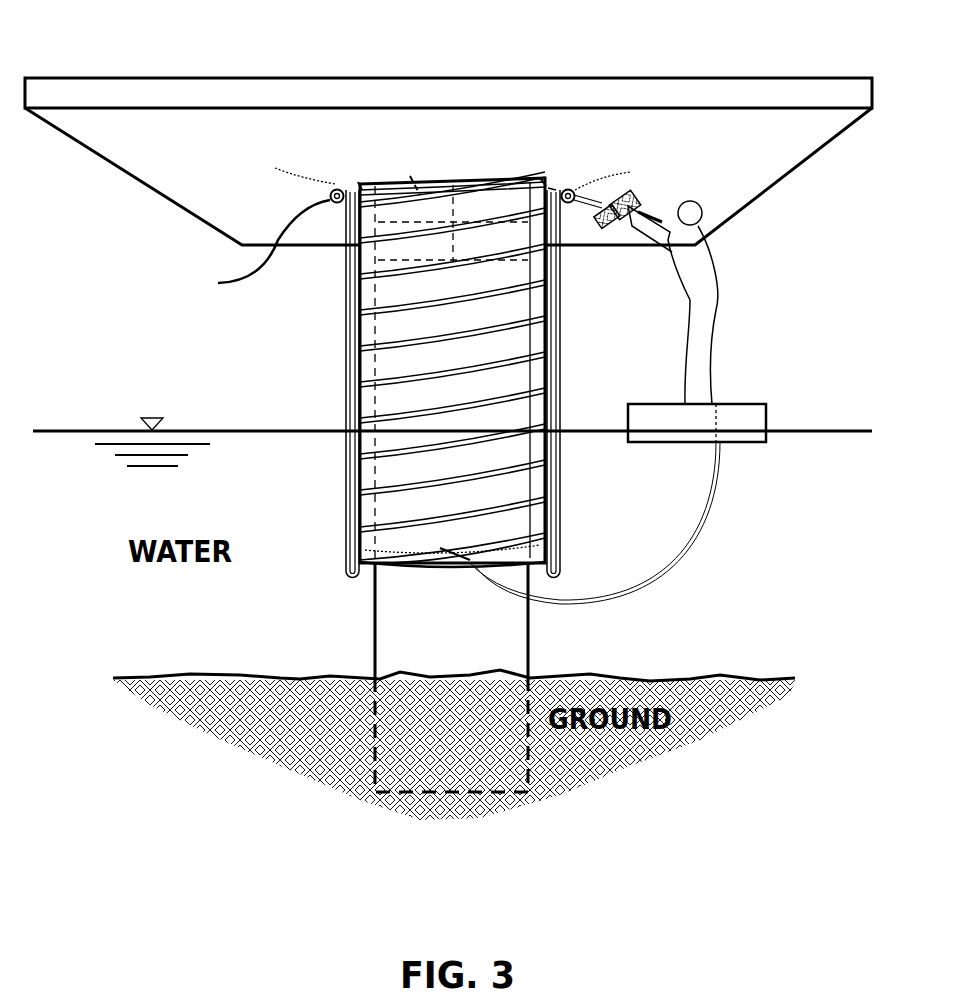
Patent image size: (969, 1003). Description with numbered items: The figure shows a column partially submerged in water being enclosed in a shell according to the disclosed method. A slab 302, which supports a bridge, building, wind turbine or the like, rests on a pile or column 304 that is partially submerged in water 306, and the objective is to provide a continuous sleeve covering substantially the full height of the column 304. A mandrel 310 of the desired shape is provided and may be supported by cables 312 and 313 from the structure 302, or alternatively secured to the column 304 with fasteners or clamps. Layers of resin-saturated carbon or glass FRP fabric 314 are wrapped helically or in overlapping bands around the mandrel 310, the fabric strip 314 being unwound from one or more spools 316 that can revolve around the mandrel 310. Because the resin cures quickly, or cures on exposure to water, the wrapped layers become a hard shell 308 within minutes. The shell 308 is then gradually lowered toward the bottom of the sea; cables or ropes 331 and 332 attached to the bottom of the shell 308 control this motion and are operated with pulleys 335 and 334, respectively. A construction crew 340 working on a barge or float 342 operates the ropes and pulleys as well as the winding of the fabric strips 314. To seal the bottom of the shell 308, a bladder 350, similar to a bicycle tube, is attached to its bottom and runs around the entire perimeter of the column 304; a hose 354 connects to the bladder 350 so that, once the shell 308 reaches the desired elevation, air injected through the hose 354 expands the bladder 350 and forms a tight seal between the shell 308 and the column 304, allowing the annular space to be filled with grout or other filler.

The slab 302 is at (690, 88).
The pile or column 304 is at (400, 655).
The water 306 is at (197, 430).
The shell 308 is at (378, 330).
The mandrel 310 is at (410, 176).
The cable 312 is at (543, 180).
The cable 313 is at (362, 182).
The FRP fabric 314 is at (553, 190).
The spool 316 is at (628, 192).
The cable or rope 331 is at (558, 500).
The cable or rope 332 is at (347, 502).
The pulley 334 is at (252, 244).
The pulley 335 is at (572, 202).
The construction crew 340 is at (697, 260).
The barge or float 342 is at (732, 408).
The bladder 350 is at (442, 550).
The hose 354 is at (668, 572).